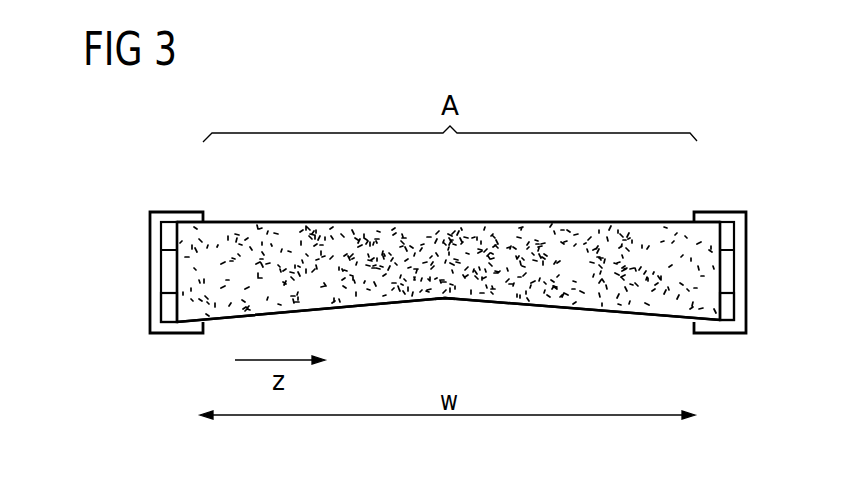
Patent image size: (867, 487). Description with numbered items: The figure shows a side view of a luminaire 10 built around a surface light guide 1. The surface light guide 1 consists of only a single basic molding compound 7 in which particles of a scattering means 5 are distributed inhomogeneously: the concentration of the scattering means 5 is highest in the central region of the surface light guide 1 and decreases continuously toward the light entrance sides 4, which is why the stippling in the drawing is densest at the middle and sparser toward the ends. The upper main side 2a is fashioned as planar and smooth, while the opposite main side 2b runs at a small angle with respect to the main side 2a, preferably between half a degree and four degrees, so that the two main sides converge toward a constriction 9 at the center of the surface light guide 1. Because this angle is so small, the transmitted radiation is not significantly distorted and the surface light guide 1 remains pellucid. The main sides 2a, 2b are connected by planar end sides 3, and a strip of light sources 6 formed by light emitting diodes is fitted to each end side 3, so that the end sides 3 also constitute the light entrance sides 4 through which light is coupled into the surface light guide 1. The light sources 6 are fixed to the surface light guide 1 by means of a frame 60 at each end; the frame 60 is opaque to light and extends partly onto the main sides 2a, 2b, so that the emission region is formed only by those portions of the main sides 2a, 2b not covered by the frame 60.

The surface light guide 1 is at (448, 267).
The main side 2a is at (632, 222).
The main side 2b is at (653, 322).
The end side 3 is at (446, 322).
The light entrance side 4 is at (170, 300).
The scattering means 5 is at (343, 228).
The light source 6 is at (170, 271).
The basic molding compound 7 is at (448, 240).
The constriction 9 is at (445, 300).
The luminaire 10 is at (471, 267).
The frame 60 is at (157, 243).